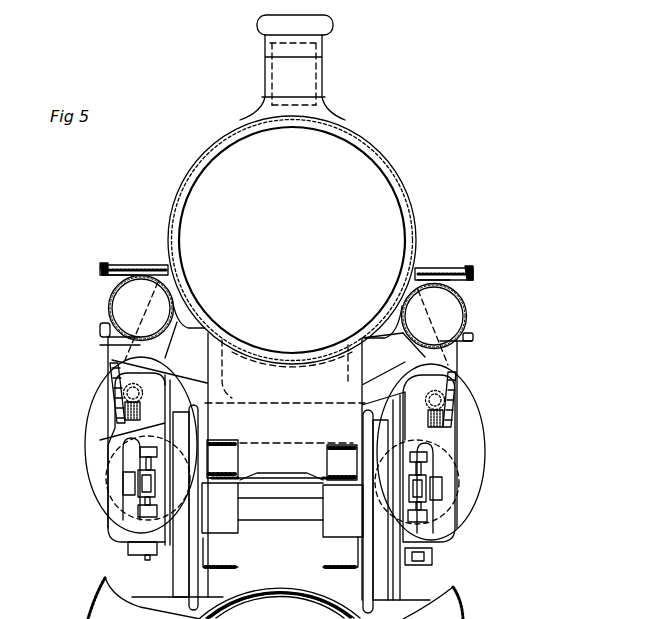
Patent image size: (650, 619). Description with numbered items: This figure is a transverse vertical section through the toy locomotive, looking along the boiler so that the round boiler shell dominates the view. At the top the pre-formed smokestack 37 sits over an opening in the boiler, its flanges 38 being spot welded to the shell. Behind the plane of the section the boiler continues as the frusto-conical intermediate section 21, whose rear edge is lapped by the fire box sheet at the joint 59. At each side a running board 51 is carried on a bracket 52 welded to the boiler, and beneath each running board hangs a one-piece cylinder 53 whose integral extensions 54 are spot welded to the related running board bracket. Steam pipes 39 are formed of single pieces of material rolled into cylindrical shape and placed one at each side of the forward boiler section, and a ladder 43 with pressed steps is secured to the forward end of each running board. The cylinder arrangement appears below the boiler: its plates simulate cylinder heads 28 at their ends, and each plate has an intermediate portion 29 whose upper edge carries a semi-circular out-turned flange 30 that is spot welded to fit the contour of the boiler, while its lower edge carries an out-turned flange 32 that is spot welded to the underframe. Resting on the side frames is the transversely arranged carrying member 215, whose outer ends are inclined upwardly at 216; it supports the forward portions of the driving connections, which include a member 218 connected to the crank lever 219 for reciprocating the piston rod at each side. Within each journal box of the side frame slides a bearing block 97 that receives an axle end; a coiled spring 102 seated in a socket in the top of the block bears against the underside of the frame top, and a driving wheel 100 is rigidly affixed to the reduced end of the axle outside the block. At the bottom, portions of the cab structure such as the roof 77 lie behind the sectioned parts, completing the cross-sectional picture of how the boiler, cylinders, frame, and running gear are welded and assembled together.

The smokestack 37 is at (323, 50).
The flanges 38 is at (323, 111).
The running boards 51 is at (107, 265).
The integral extensions 54 is at (108, 278).
The cylinder 53 is at (110, 292).
The brackets 52 is at (187, 322).
The steam pipes 39 is at (112, 330).
The ladder 43 is at (112, 346).
The out-turned flange 30 is at (222, 346).
The intermediate portions 29 is at (363, 365).
The carrying member 215 is at (313, 403).
The upwardly inclined outer ends 216 is at (190, 393).
The cylinder heads 28 is at (107, 391).
The member 218 is at (110, 447).
The crank lever 219 is at (130, 487).
The driving wheels 100 is at (182, 580).
The bearing block 97 is at (229, 520).
The out-turned flange 32 is at (275, 483).
The coiled spring 102 is at (236, 478).
The lap 59 is at (300, 603).
The roof 77 is at (100, 577).
The intermediate section 21 is at (433, 603).